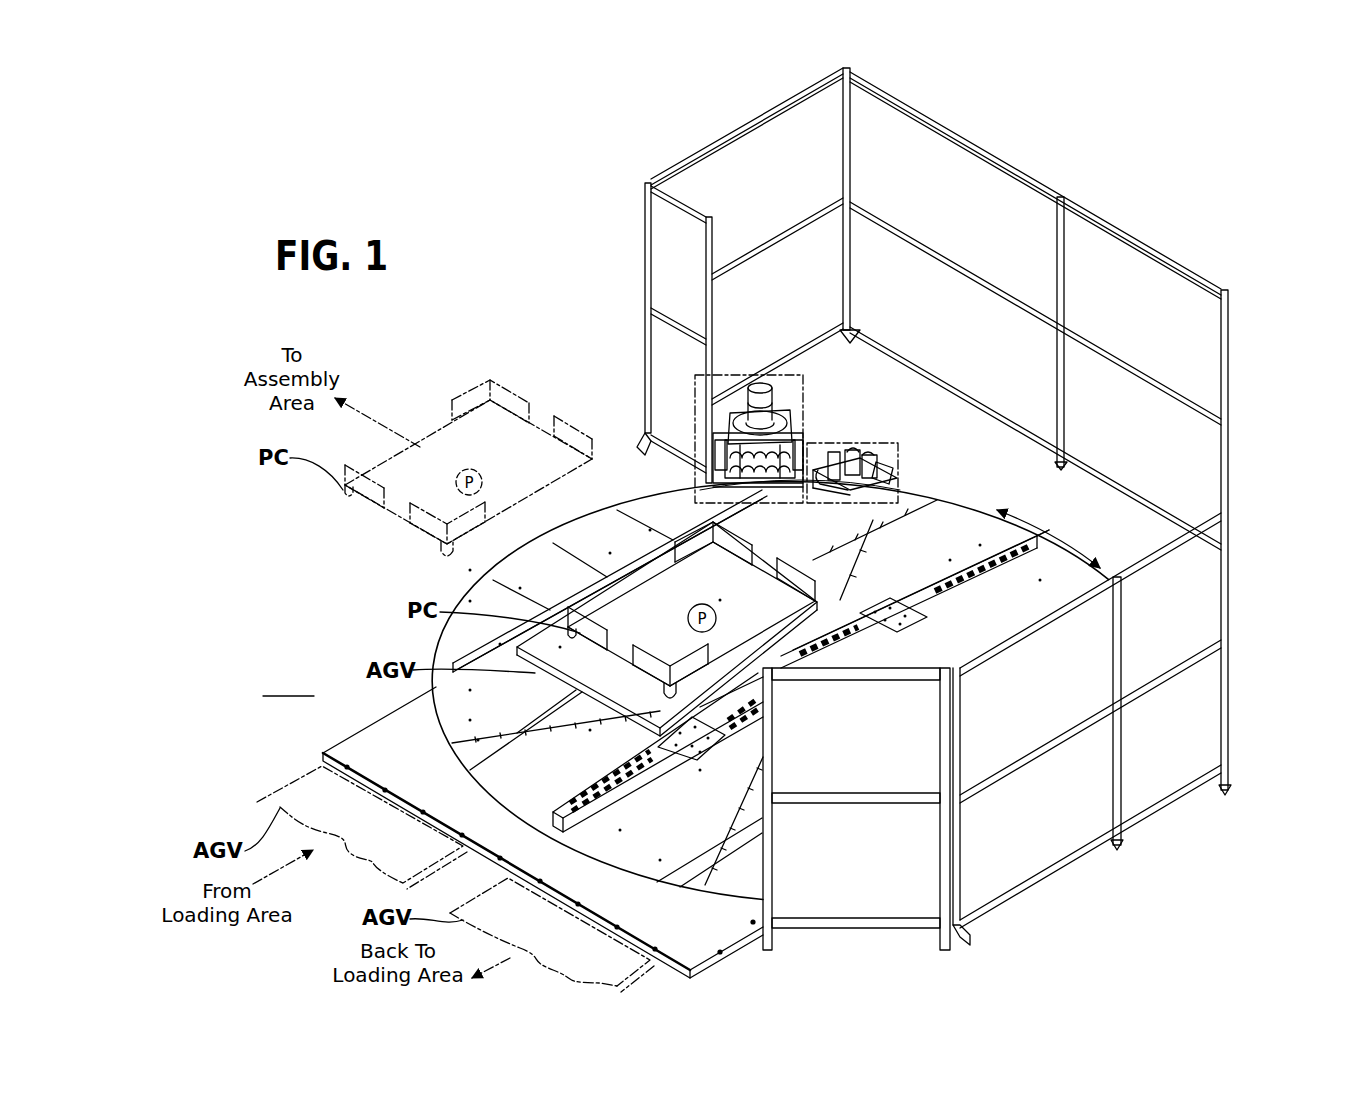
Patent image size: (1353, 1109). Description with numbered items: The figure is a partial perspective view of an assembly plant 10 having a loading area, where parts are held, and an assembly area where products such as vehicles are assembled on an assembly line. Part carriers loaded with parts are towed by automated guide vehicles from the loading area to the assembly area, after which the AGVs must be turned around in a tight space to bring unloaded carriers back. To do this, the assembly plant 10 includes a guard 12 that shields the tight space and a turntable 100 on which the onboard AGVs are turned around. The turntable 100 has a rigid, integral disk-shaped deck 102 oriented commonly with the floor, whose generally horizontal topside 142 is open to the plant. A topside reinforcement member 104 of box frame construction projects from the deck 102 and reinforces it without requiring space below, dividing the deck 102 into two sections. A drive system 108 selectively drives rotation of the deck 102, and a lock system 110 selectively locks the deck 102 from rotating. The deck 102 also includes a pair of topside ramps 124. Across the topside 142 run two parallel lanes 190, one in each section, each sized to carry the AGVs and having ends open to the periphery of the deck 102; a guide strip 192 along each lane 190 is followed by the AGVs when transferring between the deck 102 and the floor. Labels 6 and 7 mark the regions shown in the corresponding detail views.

The assembly plant 10 is at (600, 338).
The guard 12 is at (1050, 180).
The turntable 100 is at (825, 432).
The deck 102 is at (930, 495).
The topside reinforcement member 104 is at (957, 562).
The drive system 108 is at (792, 417).
The lock system 110 is at (882, 460).
The topside ramps 124 is at (524, 561).
The topside 142 is at (931, 567).
The lanes 190 is at (577, 772).
The guide strip 192 is at (517, 733).
The section view 6 indicator 6 is at (702, 513).
The section view 7 indicator 7 is at (831, 510).